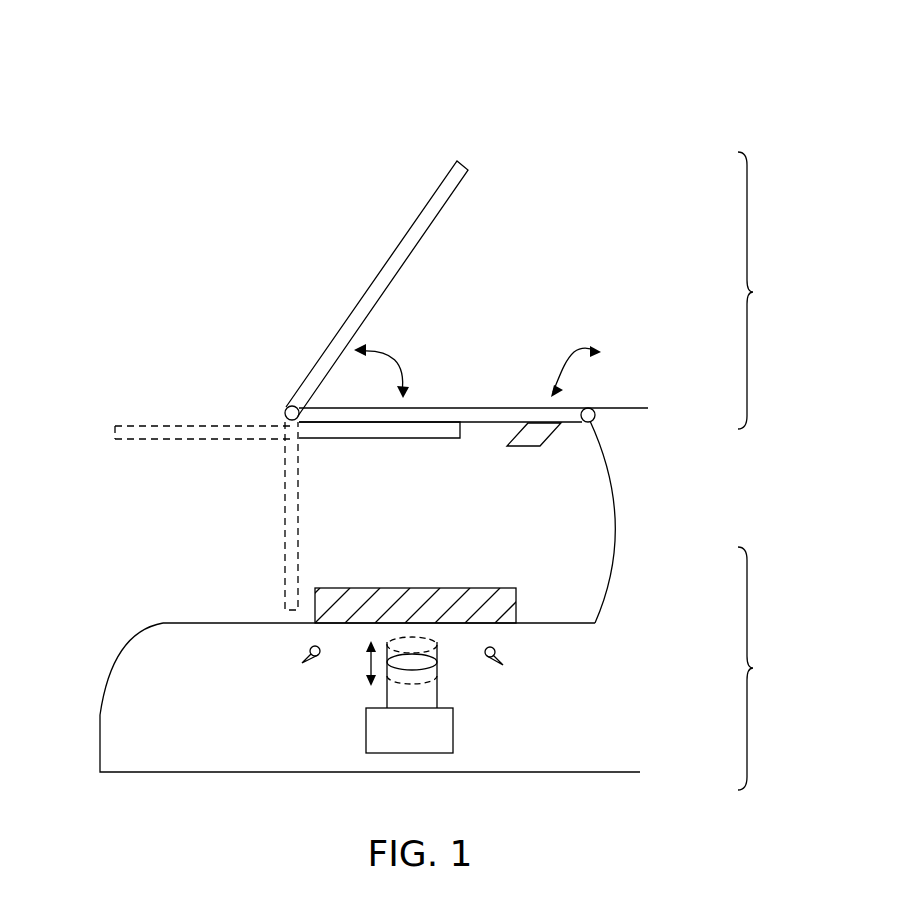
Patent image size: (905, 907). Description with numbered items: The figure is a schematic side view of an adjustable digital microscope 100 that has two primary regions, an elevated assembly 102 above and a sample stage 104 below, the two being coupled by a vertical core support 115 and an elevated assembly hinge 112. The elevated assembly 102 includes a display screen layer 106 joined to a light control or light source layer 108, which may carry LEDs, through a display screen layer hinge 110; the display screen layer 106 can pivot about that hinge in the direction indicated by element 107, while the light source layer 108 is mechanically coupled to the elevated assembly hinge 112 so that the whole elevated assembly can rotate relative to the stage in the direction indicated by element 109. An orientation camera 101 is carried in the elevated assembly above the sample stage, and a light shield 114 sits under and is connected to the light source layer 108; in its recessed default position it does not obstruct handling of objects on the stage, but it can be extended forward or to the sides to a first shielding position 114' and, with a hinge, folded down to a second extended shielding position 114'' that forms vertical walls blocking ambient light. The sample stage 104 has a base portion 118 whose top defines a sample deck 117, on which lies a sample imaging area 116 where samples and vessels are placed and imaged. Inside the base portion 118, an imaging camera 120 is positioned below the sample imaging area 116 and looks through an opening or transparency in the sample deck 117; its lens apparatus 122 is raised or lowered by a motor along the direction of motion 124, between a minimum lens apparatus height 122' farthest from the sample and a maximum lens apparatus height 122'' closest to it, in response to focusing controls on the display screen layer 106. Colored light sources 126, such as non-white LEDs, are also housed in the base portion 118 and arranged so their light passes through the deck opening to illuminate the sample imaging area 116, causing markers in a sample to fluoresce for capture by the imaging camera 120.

The adjustable digital microscope 100 is at (567, 90).
The orientation camera 101 is at (522, 448).
The elevated assembly 102 is at (762, 290).
The sample stage 104 is at (762, 668).
The display screen layer 106 is at (414, 232).
The direction of range of motion for the display screen layer 107 is at (392, 356).
The light source layer 108 is at (480, 407).
The direction of range of motion for the elevated assembly 109 is at (575, 345).
The display screen layer hinge 110 is at (285, 410).
The elevated assembly hinge 112 is at (596, 419).
The light shield 114 is at (379, 457).
The first shielding position 114' is at (198, 459).
The second extended shielding position 114'' is at (253, 516).
The vertical core support 115 is at (612, 528).
The sample imaging area 116 is at (413, 588).
The sample deck 117 is at (212, 623).
The base portion 118 is at (110, 726).
The imaging camera 120 is at (371, 736).
The lens apparatus 122 is at (380, 681).
The minimum lens apparatus height 122' is at (448, 692).
The maximum lens apparatus height 122'' is at (466, 639).
The direction of motion of the lens apparatus 124 is at (365, 663).
The colored light sources 126 is at (302, 664).